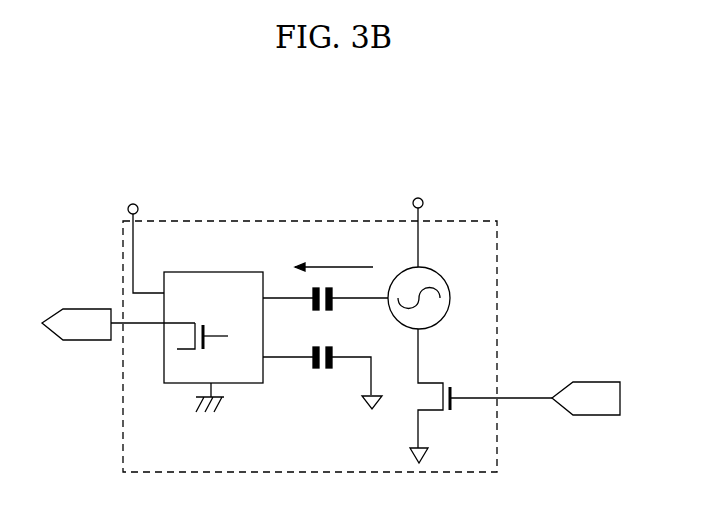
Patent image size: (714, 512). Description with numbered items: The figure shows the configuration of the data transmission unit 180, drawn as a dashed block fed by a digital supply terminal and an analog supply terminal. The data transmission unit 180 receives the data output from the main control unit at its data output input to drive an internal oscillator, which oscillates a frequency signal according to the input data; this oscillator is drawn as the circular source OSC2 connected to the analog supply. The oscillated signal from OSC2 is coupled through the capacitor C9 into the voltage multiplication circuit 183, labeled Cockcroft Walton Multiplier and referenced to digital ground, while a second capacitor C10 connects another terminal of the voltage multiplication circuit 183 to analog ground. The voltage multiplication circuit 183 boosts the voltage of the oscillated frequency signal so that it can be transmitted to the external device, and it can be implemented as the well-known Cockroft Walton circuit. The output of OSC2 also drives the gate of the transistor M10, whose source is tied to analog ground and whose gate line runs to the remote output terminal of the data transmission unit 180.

The data transmission unit 180 is at (482, 221).
The voltage multiplication circuit 183 is at (238, 383).
The oscillator OSC2 is at (401, 288).
The capacitor C9 is at (325, 289).
The capacitor C10 is at (317, 360).
The transistor M10 is at (485, 388).